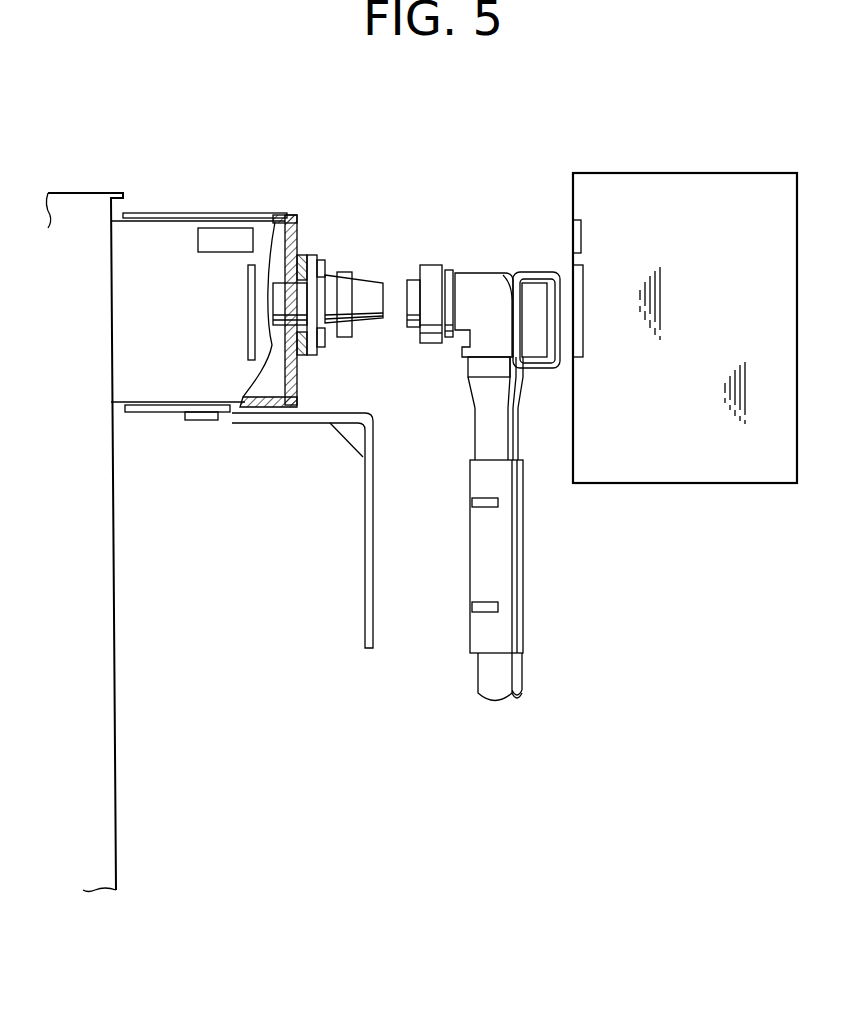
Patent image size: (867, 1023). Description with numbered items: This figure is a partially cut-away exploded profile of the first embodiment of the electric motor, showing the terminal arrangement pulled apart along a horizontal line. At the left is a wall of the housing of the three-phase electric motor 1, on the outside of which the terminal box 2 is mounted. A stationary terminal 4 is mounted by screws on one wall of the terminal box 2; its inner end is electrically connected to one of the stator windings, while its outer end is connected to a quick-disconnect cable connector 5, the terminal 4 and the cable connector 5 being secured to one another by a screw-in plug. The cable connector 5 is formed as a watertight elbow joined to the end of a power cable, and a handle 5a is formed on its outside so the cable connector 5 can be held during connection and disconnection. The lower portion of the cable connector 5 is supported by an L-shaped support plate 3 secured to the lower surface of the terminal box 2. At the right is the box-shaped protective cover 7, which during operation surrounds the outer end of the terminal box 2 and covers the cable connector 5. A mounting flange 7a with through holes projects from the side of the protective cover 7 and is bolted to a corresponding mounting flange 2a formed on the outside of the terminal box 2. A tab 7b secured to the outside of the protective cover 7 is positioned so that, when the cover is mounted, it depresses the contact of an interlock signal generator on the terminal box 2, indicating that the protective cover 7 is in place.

The three-phase electric motor 1 is at (85, 192).
The terminal box 2 is at (275, 213).
The mounting flange 2a is at (283, 374).
The L-shaped support plate 3 is at (365, 572).
The stationary terminal 4 is at (375, 282).
The quick-disconnect cable connector 5 is at (495, 272).
The handle 5a is at (537, 370).
The protective cover 7 is at (660, 172).
The mounting flange 7a is at (583, 333).
The tab 7b is at (581, 238).